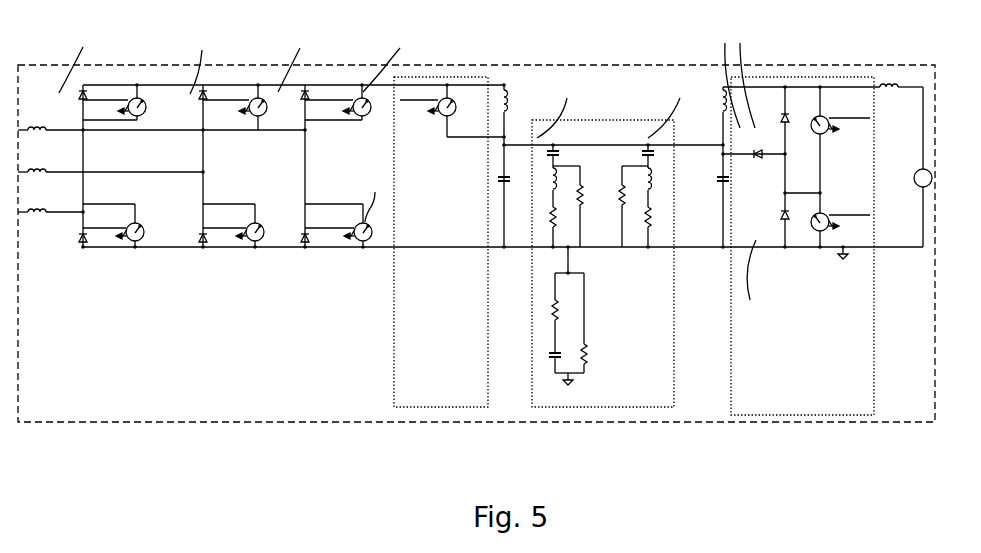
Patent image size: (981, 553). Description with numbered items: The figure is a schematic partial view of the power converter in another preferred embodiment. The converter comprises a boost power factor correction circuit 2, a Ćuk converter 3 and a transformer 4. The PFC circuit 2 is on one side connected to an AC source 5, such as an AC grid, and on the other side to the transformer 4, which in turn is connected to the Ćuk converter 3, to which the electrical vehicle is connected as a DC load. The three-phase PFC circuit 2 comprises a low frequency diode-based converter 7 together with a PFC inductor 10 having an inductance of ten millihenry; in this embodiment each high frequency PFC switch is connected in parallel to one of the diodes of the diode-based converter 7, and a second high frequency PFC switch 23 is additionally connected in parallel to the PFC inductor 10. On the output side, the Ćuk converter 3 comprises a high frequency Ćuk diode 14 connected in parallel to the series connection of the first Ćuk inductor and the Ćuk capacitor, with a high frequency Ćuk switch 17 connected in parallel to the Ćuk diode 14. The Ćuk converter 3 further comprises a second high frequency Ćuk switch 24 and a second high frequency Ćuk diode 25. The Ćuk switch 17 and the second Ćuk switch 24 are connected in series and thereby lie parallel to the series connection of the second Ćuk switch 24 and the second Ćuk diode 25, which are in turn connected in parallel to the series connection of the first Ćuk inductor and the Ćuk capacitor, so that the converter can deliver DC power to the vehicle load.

The boost power factor correction circuit 2 is at (470, 266).
The Ćuk converter 3 is at (806, 255).
The transformer 4 is at (700, 438).
The AC source 5 is at (78, 438).
The low frequency diode-based converter 7 is at (205, 249).
The PFC inductor 10 is at (506, 92).
The high frequency Ćuk diode 14 is at (788, 224).
The high frequency Ćuk switch 17 is at (822, 232).
The second high frequency PFC switch 23 is at (448, 92).
The second high frequency Ćuk switch 24 is at (827, 112).
The second high frequency Ćuk diode 25 is at (785, 112).